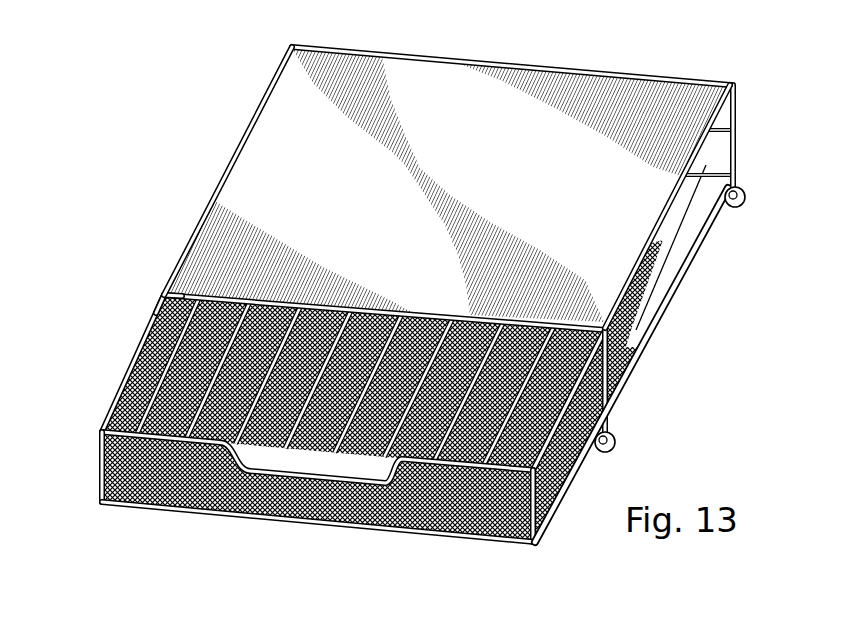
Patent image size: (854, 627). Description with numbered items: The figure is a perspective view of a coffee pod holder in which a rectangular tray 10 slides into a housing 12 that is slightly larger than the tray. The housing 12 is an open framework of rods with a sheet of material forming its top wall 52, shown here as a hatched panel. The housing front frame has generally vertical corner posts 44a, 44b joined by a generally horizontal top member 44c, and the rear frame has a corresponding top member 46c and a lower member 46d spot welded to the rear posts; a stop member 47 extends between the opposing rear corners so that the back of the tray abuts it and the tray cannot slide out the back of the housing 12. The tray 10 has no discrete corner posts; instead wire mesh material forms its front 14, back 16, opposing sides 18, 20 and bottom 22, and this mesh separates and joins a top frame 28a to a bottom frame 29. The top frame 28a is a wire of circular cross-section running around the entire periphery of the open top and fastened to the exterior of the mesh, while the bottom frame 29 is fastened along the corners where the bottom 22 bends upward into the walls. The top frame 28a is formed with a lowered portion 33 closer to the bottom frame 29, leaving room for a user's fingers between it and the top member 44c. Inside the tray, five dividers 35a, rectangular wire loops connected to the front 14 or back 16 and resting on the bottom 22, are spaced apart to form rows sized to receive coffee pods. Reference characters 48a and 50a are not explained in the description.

The tray 10 is at (106, 396).
The housing 12 is at (226, 133).
The front 14 is at (143, 481).
The back 16 is at (672, 244).
The side 18 is at (578, 462).
The side 20 is at (163, 357).
The bottom 22 is at (640, 327).
The top frame 28a is at (153, 323).
The bottom frame 29 is at (102, 498).
The lowered portion 33 is at (340, 523).
The dividers 35a is at (500, 406).
The side post 44a is at (157, 300).
The side post 44b is at (610, 395).
The top member 44c is at (217, 290).
The top member 46c is at (470, 63).
The bottom member 46d is at (722, 207).
The stop member 47 is at (738, 103).
The lid side rail 48a is at (717, 85).
The lid left rail 50a is at (277, 83).
The top wall 52 is at (353, 210).